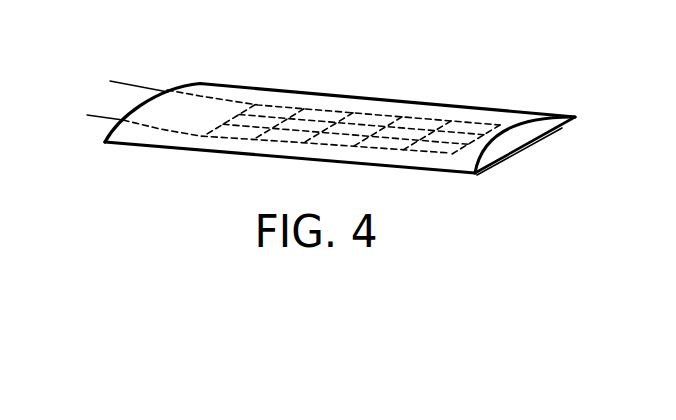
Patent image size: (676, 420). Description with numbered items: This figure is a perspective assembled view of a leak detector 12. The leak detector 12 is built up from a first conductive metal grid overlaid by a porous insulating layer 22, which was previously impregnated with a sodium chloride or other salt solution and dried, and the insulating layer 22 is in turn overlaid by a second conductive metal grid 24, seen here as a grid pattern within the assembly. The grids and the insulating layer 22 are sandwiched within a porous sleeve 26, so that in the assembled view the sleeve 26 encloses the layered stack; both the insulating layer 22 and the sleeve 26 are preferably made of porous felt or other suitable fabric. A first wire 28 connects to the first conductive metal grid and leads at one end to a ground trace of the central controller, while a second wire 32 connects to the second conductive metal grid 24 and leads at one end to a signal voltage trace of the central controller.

The leak detector 12 is at (449, 214).
The porous insulating layer 22 is at (508, 136).
The second conductive metal grid 24 is at (383, 111).
The porous sleeve 26 is at (227, 90).
The first wire 28 is at (524, 141).
The second wire 32 is at (107, 89).